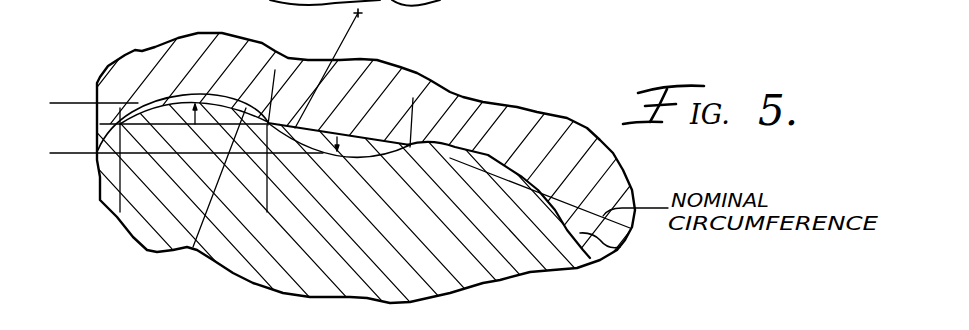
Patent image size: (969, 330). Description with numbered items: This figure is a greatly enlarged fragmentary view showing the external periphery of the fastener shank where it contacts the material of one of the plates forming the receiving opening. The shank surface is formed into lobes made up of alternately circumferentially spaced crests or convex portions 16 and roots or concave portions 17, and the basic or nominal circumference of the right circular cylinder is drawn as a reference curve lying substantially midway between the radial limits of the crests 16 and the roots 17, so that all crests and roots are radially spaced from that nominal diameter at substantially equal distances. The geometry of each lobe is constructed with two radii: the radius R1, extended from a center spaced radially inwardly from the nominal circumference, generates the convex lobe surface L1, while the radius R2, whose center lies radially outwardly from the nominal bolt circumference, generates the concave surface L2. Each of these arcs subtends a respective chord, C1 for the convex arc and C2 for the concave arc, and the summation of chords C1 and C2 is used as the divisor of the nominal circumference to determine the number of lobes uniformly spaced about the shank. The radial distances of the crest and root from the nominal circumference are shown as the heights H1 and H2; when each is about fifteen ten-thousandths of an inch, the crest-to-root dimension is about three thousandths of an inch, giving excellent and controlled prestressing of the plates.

The crests or convex portions 16 is at (484, 152).
The roots or concave portions 17 is at (620, 247).
The convex lobe surface L1 is at (184, 105).
The concave lobe surface L2 is at (270, 138).
The radial height of crest H1 is at (196, 124).
The radial height of root H2 is at (368, 118).
The radius generating convex surface R1 is at (219, 177).
The radius generating concave surface R2 is at (328, 68).
The chord of convex arc C1 is at (267, 205).
The chord of concave arc C2 is at (410, 106).